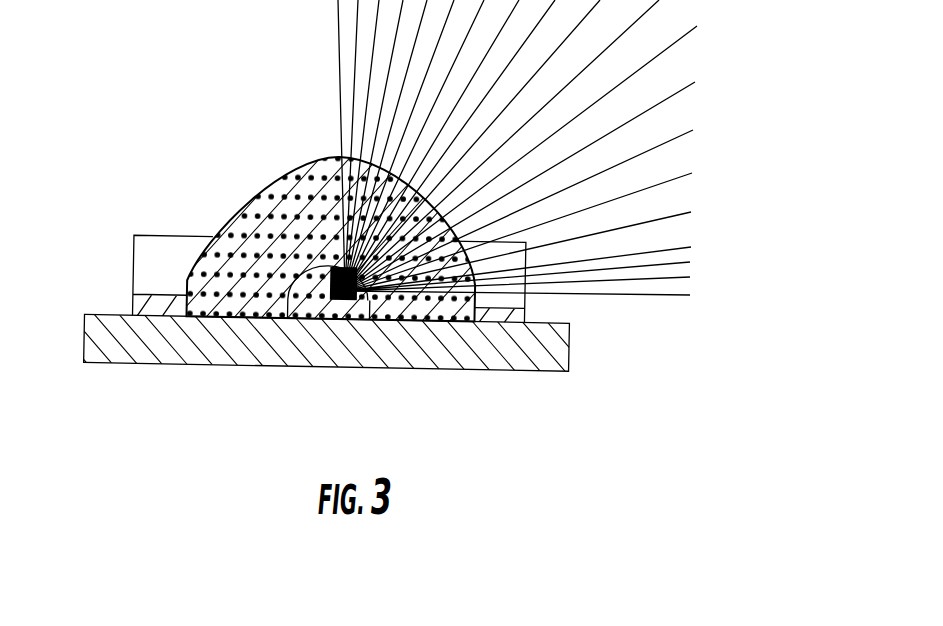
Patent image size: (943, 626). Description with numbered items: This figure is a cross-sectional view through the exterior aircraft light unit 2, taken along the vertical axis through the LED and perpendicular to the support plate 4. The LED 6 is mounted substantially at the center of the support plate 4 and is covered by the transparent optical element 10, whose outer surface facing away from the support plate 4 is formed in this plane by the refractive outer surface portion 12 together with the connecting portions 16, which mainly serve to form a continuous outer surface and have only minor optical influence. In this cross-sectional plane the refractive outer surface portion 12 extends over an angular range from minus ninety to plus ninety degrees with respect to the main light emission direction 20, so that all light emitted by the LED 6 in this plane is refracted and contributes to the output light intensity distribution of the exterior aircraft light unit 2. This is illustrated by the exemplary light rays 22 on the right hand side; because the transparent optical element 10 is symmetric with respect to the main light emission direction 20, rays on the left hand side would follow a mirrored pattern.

The exterior aircraft light unit 2 is at (386, 220).
The support plate 4 is at (85, 345).
The LED 6 is at (294, 318).
The transparent optical element 10 is at (325, 282).
The refractive outer surface portion 12 is at (361, 282).
The connecting portions 16 is at (173, 281).
The main light emission direction 20 is at (337, 22).
The exemplary light rays 22 is at (691, 130).